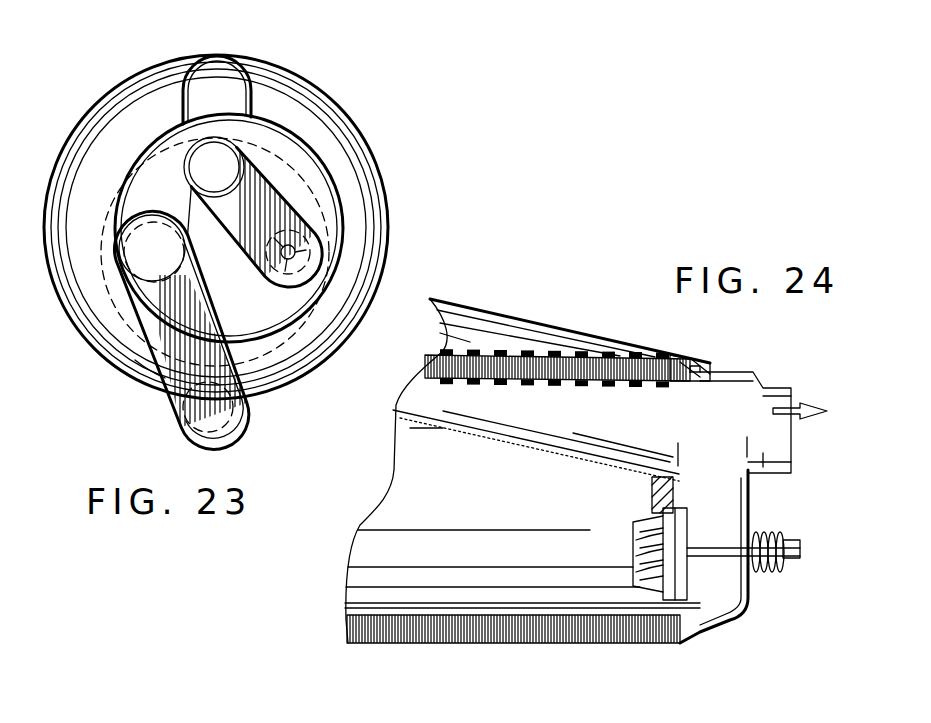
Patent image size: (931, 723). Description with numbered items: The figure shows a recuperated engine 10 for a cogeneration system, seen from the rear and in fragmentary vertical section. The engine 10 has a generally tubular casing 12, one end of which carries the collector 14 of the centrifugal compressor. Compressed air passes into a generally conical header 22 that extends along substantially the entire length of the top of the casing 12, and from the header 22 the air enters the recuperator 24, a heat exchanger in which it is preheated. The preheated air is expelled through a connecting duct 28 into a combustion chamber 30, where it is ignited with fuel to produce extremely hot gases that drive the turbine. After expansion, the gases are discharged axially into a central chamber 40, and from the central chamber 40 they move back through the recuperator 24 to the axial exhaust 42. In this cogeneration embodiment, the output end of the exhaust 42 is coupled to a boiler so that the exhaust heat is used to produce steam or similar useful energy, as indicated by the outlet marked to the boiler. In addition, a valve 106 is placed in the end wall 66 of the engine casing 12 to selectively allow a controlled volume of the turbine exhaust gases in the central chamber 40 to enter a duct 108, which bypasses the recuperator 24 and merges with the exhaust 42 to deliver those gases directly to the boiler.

In FIG. 23, the engine 10 is at (386, 196).
In FIG. 23, the casing 12 is at (290, 78).
In FIG. 24, the casing 12 is at (578, 642).
In FIG. 23, the collector 14 is at (341, 6).
In FIG. 23, the header 22 is at (183, 60).
In FIG. 24, the header 22 is at (543, 338).
In FIG. 23, the recuperator 24 is at (228, 37).
In FIG. 24, the recuperator 24 is at (540, 385).
In FIG. 23, the connecting duct 28 is at (150, 378).
In FIG. 23, the combustion chamber 30 is at (118, 195).
In FIG. 24, the central chamber 40 is at (512, 560).
In FIG. 23, the exhaust 42 is at (185, 182).
In FIG. 24, the exhaust 42 is at (793, 396).
In FIG. 24, the end wall 66 is at (674, 496).
In FIG. 23, the valve 106 is at (282, 283).
In FIG. 24, the valve 106 is at (714, 566).
In FIG. 23, the duct 108 is at (231, 242).
In FIG. 24, the duct 108 is at (748, 508).